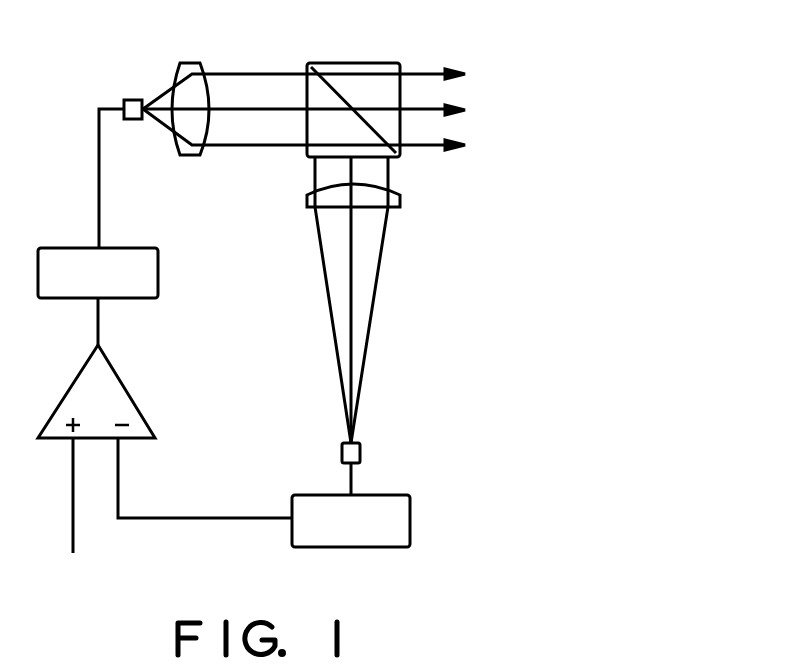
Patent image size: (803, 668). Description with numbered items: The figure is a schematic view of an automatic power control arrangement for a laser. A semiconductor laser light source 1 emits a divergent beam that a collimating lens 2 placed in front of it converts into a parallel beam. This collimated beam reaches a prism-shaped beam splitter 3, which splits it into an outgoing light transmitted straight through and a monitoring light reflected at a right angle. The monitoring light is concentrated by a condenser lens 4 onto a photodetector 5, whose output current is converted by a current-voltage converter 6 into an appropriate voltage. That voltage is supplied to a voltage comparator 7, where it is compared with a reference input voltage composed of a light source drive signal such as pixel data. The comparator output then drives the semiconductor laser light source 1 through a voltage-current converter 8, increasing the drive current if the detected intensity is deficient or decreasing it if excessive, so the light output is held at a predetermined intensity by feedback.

The semiconductor laser light source 1 is at (131, 99).
The collimating lens 2 is at (193, 63).
The beam splitter 3 is at (352, 63).
The condenser lens 4 is at (401, 200).
The photodetector 5 is at (361, 452).
The current-voltage converter 6 is at (411, 522).
The voltage comparator 7 is at (145, 418).
The voltage-current converter 8 is at (159, 275).